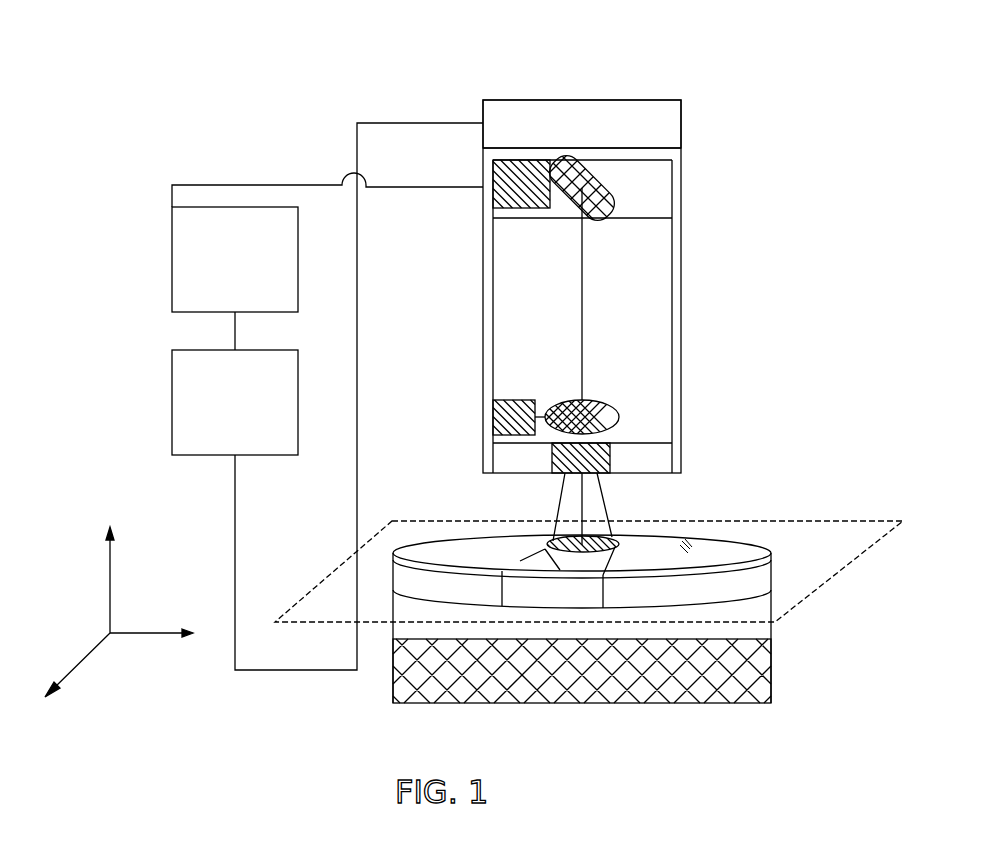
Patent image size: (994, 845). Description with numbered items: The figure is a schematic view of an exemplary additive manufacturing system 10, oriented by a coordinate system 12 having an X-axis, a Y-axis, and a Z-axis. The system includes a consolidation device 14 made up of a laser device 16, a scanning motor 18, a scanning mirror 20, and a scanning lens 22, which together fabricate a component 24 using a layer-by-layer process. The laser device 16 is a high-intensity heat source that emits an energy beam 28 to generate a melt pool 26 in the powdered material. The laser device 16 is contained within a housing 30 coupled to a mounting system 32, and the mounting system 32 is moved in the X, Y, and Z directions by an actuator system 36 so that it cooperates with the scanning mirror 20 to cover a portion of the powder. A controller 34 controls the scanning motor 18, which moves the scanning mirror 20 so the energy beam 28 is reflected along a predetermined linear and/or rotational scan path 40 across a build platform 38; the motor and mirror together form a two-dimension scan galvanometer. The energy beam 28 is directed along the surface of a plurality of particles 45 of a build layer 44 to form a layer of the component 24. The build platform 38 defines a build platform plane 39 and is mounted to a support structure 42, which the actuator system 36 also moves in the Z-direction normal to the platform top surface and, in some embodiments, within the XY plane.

The additive manufacturing system 10 is at (708, 55).
The coordinate system 12 is at (88, 618).
The consolidation device 14 is at (800, 228).
The laser device 16 is at (483, 167).
The scanning motor 18 is at (516, 398).
The scanning mirror 20 is at (598, 402).
The scanning lens 22 is at (612, 450).
The component 24 is at (520, 560).
The melt pool 26 is at (604, 572).
The energy beam 28 is at (584, 248).
The housing 30 is at (681, 308).
The mounting system 32 is at (681, 118).
The controller 34 is at (247, 274).
The actuator system 36 is at (247, 416).
The build platform 38 is at (624, 589).
The build platform plane 39 is at (851, 521).
The scan path 40 is at (552, 547).
The support structure 42 is at (745, 690).
The build layer 44 is at (742, 548).
The particles 45 is at (690, 546).